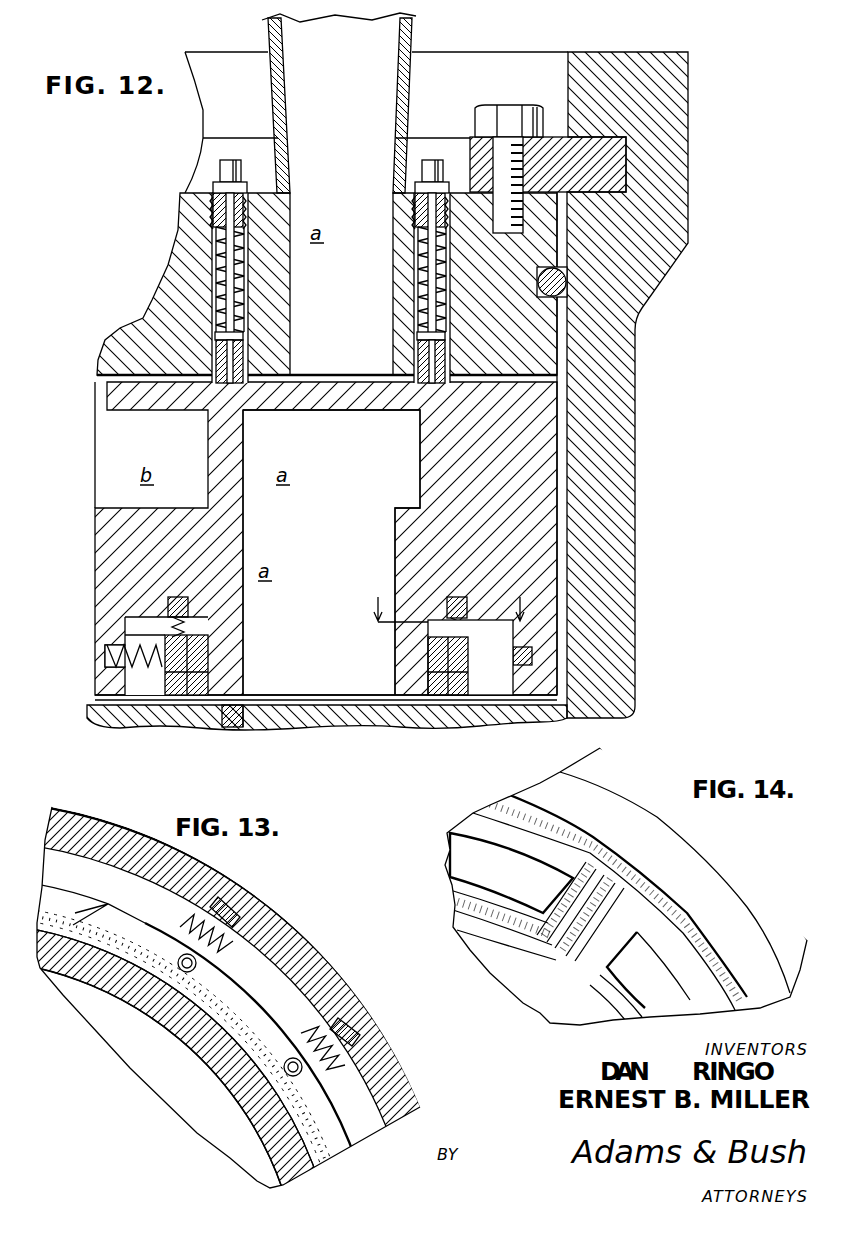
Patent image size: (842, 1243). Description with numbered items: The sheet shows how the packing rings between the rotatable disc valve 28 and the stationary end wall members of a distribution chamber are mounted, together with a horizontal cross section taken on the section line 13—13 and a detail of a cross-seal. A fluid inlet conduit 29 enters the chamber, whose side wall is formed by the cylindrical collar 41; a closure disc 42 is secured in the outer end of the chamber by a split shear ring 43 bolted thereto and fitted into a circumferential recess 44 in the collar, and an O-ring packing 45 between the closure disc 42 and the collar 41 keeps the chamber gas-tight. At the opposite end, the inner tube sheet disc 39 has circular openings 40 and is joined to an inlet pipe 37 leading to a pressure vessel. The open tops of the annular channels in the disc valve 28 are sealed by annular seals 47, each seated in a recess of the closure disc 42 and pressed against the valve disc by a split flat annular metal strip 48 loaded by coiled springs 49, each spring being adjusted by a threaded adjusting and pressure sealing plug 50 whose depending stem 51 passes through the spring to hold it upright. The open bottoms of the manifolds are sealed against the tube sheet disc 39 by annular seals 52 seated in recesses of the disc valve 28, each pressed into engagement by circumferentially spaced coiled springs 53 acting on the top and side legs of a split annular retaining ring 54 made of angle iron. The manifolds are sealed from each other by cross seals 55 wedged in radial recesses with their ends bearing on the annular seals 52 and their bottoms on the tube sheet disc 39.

In FIG. 12, the section line 13— 13 is at (451, 607).
In FIG. 12, the double-faced rotatable disc valve 28 is at (457, 465).
In FIG. 13, the double-faced rotatable disc valve 28 is at (313, 957).
In FIG. 14, the double-faced rotatable disc valve 28 is at (657, 787).
In FIG. 12, the fluid inlet conduit 29 is at (414, 44).
In FIG. 12, the inlet pipe 37 is at (248, 728).
In FIG. 12, the inner tube sheet disc 39 is at (524, 722).
In FIG. 12, the circular opening 40 is at (224, 727).
In FIG. 12, the cylindrical collar 41 is at (637, 472).
In FIG. 12, the closure disc 42 is at (505, 357).
In FIG. 12, the split shear ring 43 is at (625, 174).
In FIG. 12, the circumferential recess 44 is at (628, 141).
In FIG. 12, the O-ring packing 45 is at (566, 283).
In FIG. 12, the annular seal 47 is at (245, 362).
In FIG. 12, the split flat annular metal strip 48 is at (245, 334).
In FIG. 12, the coiled spring 49 is at (245, 282).
In FIG. 12, the adjusting and pressure sealing plug 50 is at (233, 160).
In FIG. 12, the depending stem 51 is at (216, 262).
In FIG. 12, the annular seal 52 is at (205, 672).
In FIG. 13, the annular seal 52 is at (100, 933).
In FIG. 14, the annular seal 52 is at (452, 838).
In FIG. 12, the coiled spring 53 is at (506, 650).
In FIG. 13, the coiled spring 53 is at (198, 964).
In FIG. 12, the split annular retaining ring 54 is at (190, 607).
In FIG. 13, the split annular retaining ring 54 is at (267, 1024).
In FIG. 12, the cross seal 55 is at (150, 622).
In FIG. 14, the cross seal 55 is at (576, 1014).